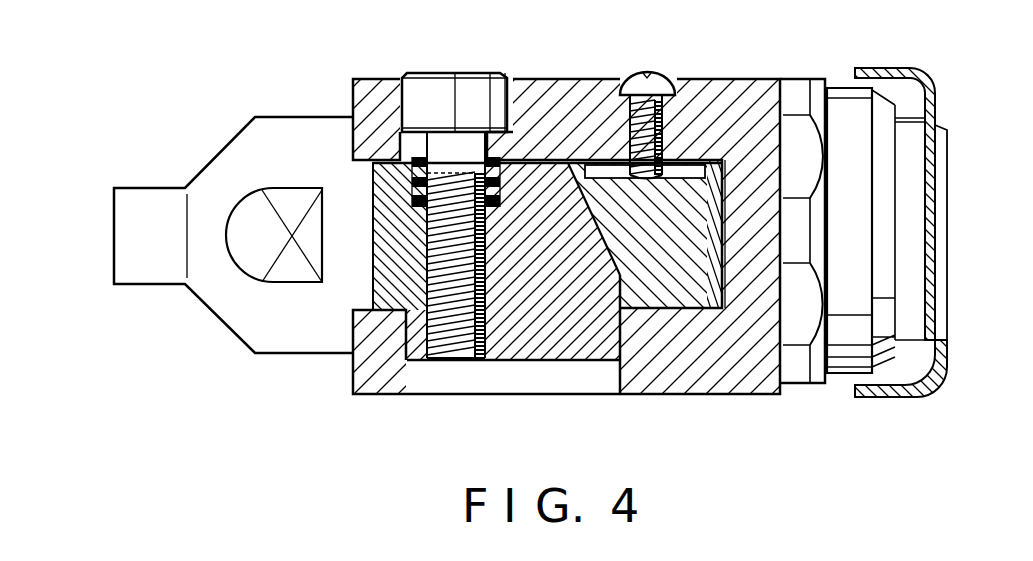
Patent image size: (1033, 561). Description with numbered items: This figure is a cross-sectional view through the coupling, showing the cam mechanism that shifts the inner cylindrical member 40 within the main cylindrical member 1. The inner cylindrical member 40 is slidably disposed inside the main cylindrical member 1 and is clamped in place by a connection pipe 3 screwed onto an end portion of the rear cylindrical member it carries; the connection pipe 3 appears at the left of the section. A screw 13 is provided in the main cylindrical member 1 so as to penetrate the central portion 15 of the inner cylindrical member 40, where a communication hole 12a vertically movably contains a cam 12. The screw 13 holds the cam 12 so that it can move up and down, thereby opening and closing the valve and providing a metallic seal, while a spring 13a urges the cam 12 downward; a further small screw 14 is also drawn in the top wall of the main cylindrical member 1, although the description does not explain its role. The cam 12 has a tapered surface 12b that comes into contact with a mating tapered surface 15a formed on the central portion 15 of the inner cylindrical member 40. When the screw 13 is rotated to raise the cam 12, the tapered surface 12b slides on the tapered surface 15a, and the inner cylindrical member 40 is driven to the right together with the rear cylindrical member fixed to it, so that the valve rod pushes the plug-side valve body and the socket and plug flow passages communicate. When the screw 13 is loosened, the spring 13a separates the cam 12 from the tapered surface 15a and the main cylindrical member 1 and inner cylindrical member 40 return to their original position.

The main cylindrical member 1 is at (727, 79).
The connection pipe 3 is at (222, 300).
The cam 12 is at (551, 357).
The communication hole 12a is at (407, 297).
The tapered surface of cam 12b is at (598, 216).
The screw 13 is at (466, 88).
The spring 13a is at (412, 176).
The set screw 14 is at (629, 73).
The central portion of inner cylindrical member 15 is at (700, 297).
The tapered surface of central portion 15a is at (600, 290).
The inner cylindrical member 40 is at (385, 284).